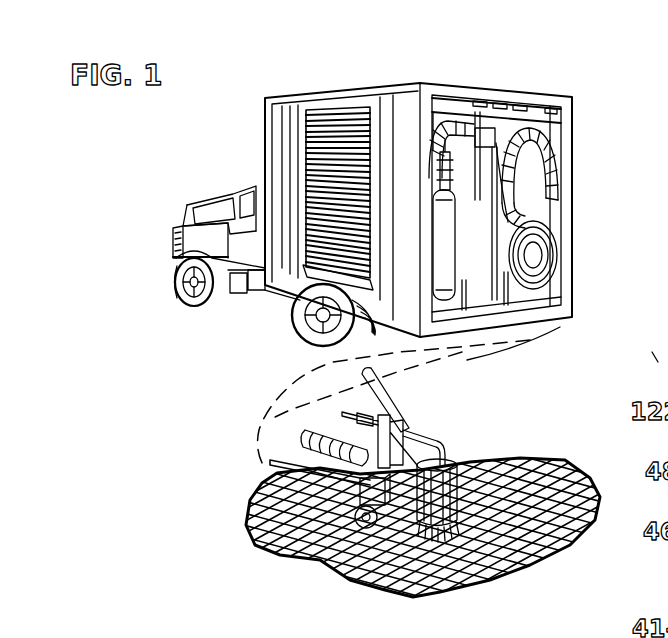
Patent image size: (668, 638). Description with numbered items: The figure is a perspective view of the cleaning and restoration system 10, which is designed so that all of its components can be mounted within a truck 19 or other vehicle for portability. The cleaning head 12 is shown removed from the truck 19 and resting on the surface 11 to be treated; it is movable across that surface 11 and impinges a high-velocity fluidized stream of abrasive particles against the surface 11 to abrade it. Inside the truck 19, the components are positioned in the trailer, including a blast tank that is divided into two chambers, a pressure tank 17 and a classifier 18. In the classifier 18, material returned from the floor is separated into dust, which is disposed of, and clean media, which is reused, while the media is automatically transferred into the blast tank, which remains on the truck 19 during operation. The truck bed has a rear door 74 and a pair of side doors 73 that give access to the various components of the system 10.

The cleaning and restoration system 10 is at (607, 137).
The surface 11 is at (268, 512).
The cleaning head 12 is at (460, 470).
The pressure tank 17 is at (540, 195).
The classifier 18 is at (480, 150).
The truck 19 is at (393, 106).
The side doors 73 is at (331, 118).
The rear door 74 is at (533, 110).